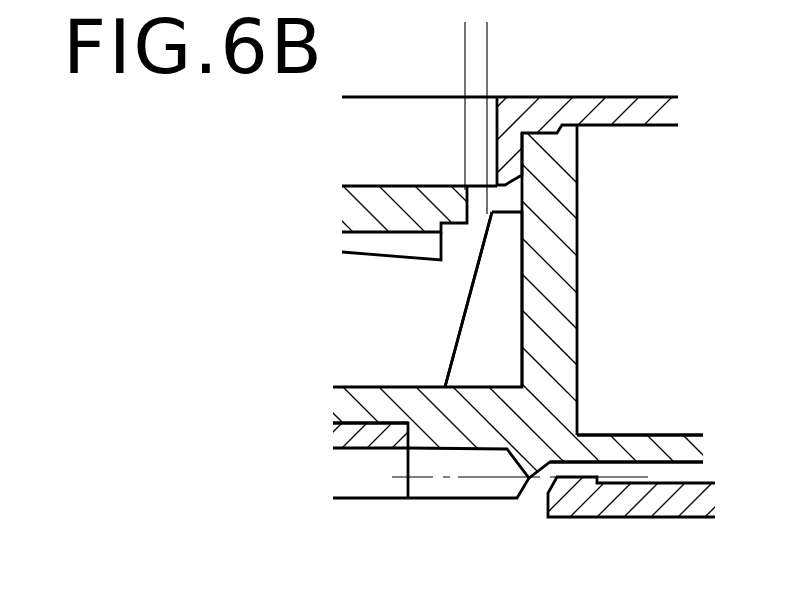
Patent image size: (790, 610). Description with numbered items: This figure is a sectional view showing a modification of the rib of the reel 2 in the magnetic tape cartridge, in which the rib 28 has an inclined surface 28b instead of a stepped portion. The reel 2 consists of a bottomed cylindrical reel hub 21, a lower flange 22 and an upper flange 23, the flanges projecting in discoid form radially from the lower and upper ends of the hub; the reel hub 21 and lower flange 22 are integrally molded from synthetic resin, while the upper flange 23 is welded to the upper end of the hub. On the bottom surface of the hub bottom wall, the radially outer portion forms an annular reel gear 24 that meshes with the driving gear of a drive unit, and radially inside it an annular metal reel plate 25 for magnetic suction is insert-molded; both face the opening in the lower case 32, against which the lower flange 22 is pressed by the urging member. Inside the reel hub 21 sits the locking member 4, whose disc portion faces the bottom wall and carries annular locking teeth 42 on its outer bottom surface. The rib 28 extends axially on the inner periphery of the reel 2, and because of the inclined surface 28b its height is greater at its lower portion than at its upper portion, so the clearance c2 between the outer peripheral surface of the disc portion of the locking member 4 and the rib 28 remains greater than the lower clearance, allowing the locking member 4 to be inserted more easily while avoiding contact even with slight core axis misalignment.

The reel 2 is at (615, 68).
The locking member 4 is at (408, 198).
The reel hub 21 is at (562, 303).
The lower flange 22 is at (675, 447).
The upper flange 23 is at (638, 118).
The reel gear 24 is at (462, 488).
The reel plate 25 is at (348, 440).
The rib 28 is at (503, 343).
The inclined surface 28b is at (470, 293).
The lower case 32 is at (648, 510).
The locking teeth 42 is at (398, 247).
The clearance c2 is at (442, 33).